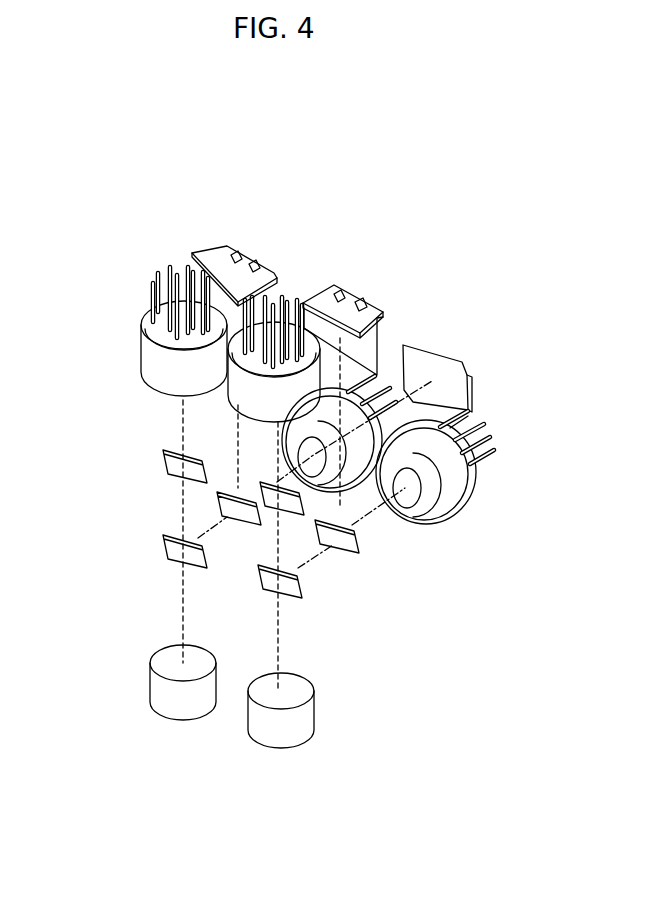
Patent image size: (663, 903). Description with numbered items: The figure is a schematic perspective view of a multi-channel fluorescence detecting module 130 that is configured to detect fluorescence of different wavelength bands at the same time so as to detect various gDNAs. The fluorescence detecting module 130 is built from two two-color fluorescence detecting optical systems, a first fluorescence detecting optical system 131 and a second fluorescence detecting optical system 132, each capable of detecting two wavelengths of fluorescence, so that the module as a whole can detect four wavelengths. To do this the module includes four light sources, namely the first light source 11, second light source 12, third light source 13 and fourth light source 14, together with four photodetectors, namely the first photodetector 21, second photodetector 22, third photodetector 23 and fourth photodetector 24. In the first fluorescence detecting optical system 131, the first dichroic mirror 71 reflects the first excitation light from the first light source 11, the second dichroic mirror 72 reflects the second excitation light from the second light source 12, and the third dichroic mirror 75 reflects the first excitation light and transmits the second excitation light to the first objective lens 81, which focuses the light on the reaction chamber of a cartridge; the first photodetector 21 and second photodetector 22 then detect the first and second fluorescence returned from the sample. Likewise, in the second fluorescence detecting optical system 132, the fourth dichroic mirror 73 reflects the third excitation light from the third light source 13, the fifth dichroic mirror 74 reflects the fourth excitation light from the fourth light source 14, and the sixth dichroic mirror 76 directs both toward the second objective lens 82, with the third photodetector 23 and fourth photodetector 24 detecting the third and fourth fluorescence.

The first light source 11 is at (248, 256).
The second light source 12 is at (371, 349).
The third light source 13 is at (355, 288).
The fourth light source 14 is at (438, 360).
The first photodetector 21 is at (351, 459).
The second photodetector 22 is at (147, 318).
The third photodetector 23 is at (448, 489).
The fourth photodetector 24 is at (272, 323).
The first dichroic mirror 71 is at (229, 490).
The second dichroic mirror 72 is at (175, 468).
The fourth dichroic mirror 73 is at (345, 548).
The fifth dichroic mirror 74 is at (288, 512).
The third dichroic mirror 75 is at (172, 555).
The sixth dichroic mirror 76 is at (267, 585).
The first objective lens 81 is at (157, 692).
The second objective lens 82 is at (303, 720).
The fluorescence detecting module 130 is at (197, 770).
The first fluorescence detecting optical system 131 is at (137, 535).
The second fluorescence detecting optical system 132 is at (329, 622).